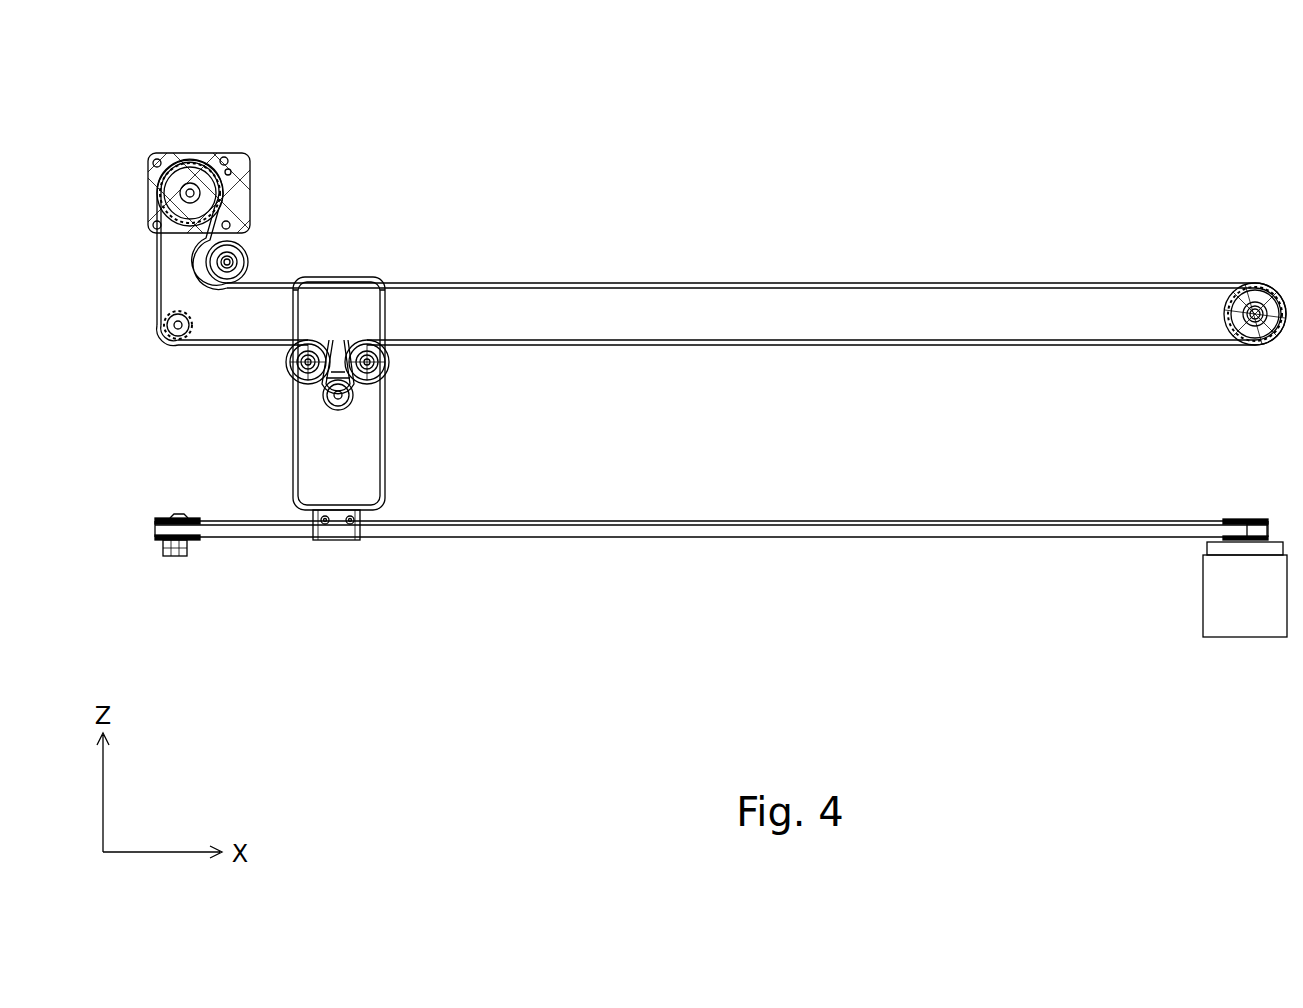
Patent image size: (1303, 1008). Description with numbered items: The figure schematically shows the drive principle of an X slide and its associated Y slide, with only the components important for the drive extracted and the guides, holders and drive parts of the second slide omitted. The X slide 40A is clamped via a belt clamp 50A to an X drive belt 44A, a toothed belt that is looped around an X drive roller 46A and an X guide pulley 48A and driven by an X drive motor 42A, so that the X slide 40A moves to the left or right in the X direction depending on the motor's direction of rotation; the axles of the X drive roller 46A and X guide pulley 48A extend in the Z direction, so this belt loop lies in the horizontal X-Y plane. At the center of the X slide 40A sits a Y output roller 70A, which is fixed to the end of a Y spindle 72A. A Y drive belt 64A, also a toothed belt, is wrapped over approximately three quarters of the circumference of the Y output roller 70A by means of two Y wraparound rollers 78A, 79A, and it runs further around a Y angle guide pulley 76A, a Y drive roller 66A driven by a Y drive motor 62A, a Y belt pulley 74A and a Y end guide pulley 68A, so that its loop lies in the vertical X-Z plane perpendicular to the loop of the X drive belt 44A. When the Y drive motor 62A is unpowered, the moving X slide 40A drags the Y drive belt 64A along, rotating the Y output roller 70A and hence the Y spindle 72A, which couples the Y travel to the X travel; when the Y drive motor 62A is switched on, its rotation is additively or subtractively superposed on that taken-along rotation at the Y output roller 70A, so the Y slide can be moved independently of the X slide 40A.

The X slide 40A is at (316, 443).
The X drive motor 42A is at (1248, 613).
The X drive belt 44A is at (872, 530).
The X drive roller 46A is at (1245, 520).
The X guide pulley 48A is at (165, 528).
The belt clamp 50A is at (337, 528).
The Y drive motor 62A is at (208, 152).
The Y drive belt 64A is at (668, 283).
The Y drive roller 66A is at (163, 195).
The Y end guide pulley 68A is at (1245, 305).
The Y output roller 70A is at (350, 394).
The Y spindle 72A is at (338, 378).
The Y belt pulley 74A is at (248, 258).
The Y angle guide pulley 76A is at (163, 323).
The Y wraparound roller 78A is at (290, 370).
The Y wraparound roller 79A is at (385, 367).